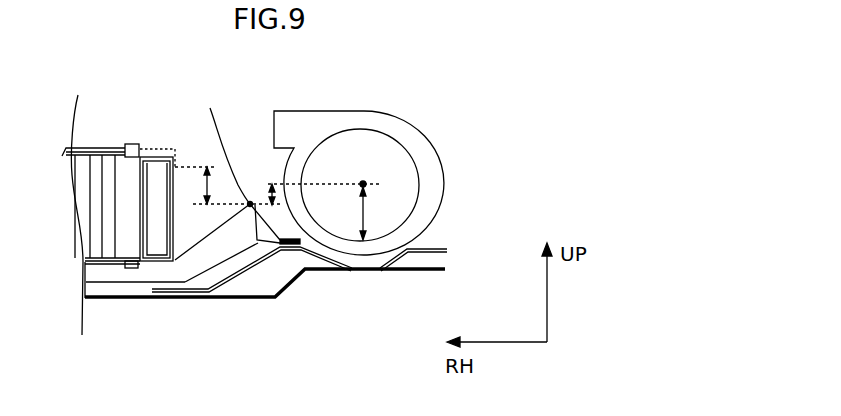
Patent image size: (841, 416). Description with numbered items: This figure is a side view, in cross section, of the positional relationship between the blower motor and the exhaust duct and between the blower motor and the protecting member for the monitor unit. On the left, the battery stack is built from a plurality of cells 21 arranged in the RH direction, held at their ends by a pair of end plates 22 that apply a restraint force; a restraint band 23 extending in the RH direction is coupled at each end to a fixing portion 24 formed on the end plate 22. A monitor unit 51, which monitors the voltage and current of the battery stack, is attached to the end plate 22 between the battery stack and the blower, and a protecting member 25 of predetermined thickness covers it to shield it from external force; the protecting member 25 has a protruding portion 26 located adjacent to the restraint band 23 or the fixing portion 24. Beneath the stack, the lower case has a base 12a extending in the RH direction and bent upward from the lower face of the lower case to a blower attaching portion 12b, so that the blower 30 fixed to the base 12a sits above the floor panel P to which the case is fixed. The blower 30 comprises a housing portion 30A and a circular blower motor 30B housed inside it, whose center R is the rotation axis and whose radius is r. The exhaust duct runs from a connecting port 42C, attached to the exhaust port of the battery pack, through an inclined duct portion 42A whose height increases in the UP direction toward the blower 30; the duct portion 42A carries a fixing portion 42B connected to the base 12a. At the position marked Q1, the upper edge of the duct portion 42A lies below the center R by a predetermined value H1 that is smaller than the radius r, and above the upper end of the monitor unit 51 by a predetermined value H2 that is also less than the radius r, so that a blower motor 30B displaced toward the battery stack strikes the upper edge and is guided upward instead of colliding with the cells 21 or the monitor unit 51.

The cell 21 is at (107, 242).
The end plate 22 is at (125, 168).
The restraint band 23 is at (67, 148).
The fixing portion 24 is at (132, 144).
The protecting member 25 is at (175, 210).
The protruding portion 26 is at (153, 149).
The monitor unit 51 is at (148, 227).
The blower 30 is at (405, 160).
The housing portion 30A is at (443, 203).
The blower motor 30B is at (419, 184).
The duct portion 42A is at (222, 250).
The fixing portion 42B is at (294, 250).
The connecting port 42C is at (155, 275).
The base 12a is at (251, 266).
The blower attaching portion 12b is at (416, 248).
The floor panel P is at (437, 271).
The position Q1 is at (228, 163).
The predetermined value H1 is at (270, 184).
The predetermined value H2 is at (207, 167).
The center R is at (363, 183).
The radius r is at (367, 213).